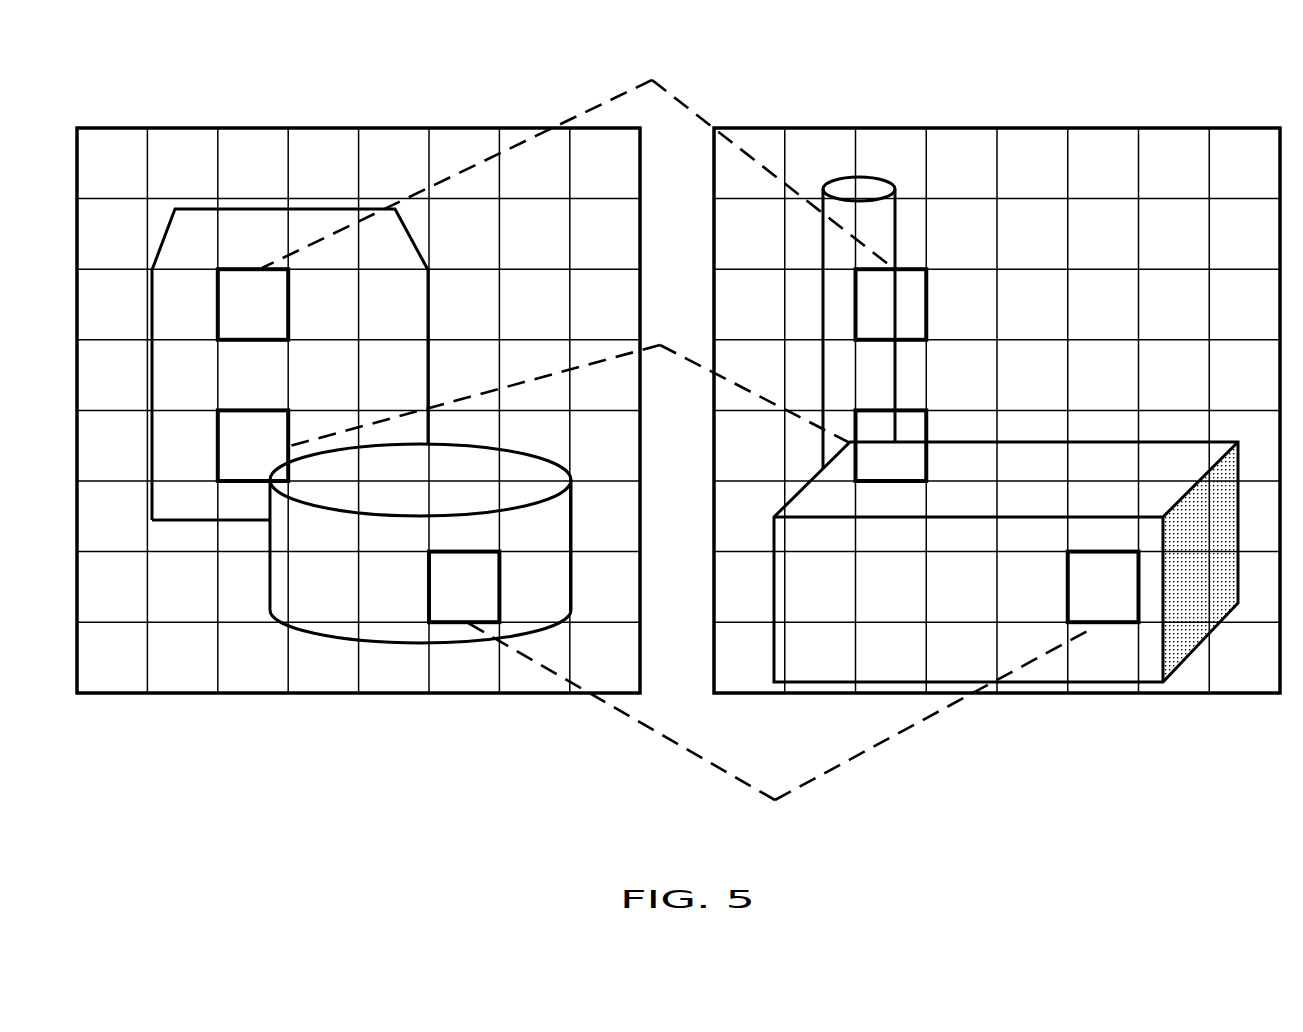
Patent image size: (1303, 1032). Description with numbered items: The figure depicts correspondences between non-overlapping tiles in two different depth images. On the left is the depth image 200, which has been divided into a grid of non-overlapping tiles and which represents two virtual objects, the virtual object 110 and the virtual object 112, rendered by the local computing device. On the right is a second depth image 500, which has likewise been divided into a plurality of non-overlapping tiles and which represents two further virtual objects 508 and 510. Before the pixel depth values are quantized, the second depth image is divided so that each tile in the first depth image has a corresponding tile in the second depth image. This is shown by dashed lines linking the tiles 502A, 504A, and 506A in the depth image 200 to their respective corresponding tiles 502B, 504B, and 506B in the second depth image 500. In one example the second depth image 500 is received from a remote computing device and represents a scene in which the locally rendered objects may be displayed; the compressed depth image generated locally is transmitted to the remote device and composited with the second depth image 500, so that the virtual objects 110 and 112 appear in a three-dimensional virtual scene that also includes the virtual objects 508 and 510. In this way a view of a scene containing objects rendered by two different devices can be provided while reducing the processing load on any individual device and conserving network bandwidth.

The depth image 200 is at (150, 78).
The second depth image 500 is at (792, 78).
The virtual object 110 is at (207, 208).
The virtual object 112 is at (508, 446).
The tile 502A is at (247, 343).
The tile 506A is at (262, 410).
The tile 504A is at (467, 552).
The virtual object 508 is at (866, 177).
The virtual object 510 is at (1090, 442).
The tile 502B is at (895, 270).
The tile 506B is at (897, 410).
The tile 504B is at (1067, 567).